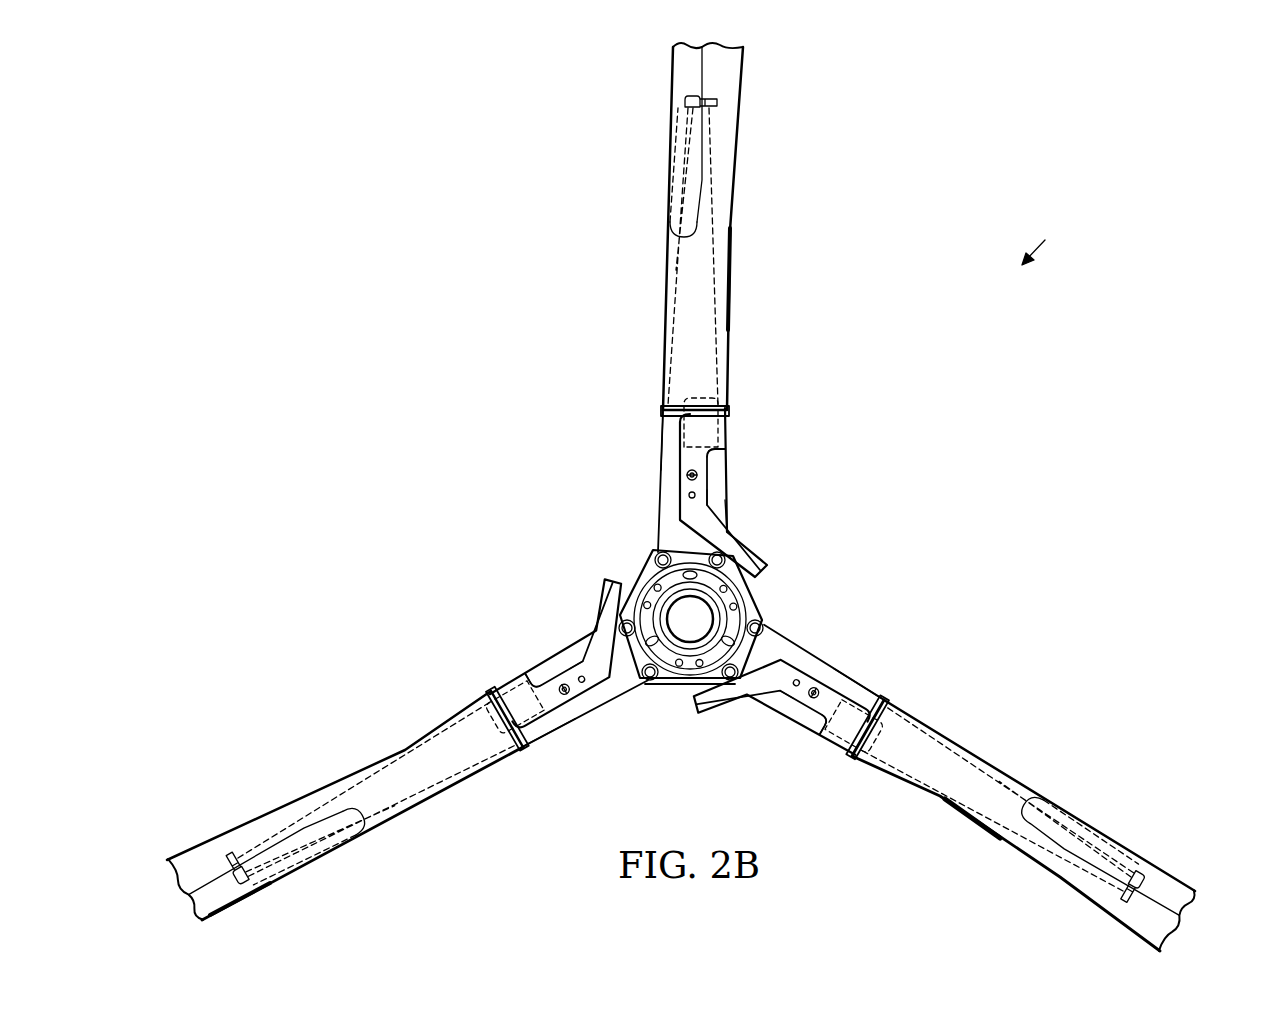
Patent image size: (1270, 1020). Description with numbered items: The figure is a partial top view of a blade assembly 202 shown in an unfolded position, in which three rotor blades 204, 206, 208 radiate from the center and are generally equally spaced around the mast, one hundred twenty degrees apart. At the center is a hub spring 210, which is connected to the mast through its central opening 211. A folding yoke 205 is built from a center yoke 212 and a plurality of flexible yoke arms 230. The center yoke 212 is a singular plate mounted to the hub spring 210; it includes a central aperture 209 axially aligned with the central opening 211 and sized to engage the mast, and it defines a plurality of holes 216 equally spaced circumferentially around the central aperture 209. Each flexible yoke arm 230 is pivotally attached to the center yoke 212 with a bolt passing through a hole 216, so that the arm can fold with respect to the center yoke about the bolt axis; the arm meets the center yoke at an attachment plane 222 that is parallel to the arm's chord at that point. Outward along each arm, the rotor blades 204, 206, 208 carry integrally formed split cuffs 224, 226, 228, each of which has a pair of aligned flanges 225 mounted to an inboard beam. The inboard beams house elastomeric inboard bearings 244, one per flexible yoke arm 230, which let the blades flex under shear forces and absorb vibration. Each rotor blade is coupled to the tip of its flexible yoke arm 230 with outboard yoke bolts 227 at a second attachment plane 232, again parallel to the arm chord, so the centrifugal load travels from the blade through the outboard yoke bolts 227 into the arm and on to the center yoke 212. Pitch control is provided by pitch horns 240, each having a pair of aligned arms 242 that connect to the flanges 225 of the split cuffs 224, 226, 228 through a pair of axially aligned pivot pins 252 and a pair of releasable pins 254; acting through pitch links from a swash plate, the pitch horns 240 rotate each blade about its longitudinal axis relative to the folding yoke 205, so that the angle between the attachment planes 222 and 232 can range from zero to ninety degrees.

The blade assembly 202 is at (1047, 234).
The rotor blade 204 is at (250, 822).
The folding yoke 205 is at (657, 690).
The rotor blade 206 is at (740, 137).
The rotor blade 208 is at (1080, 897).
The central aperture 209 is at (647, 563).
The hub spring 210 is at (760, 610).
The central opening 211 is at (742, 535).
The center yoke 212 is at (677, 533).
The holes 216 is at (708, 475).
The attachment plane 222 is at (686, 475).
The split cuff 224 is at (488, 697).
The flanges 225 is at (725, 448).
The split cuff 226 is at (720, 425).
The outboard yoke bolts 227 is at (683, 108).
The split cuff 228 is at (858, 693).
The flexible yoke arms 230 is at (663, 317).
The attachment plane 232 is at (685, 150).
The pitch horns 240 is at (735, 532).
The arms 242 is at (713, 498).
The inboard bearing 244 is at (660, 432).
The pivot pins 252 is at (690, 474).
The releasable pins 254 is at (692, 496).